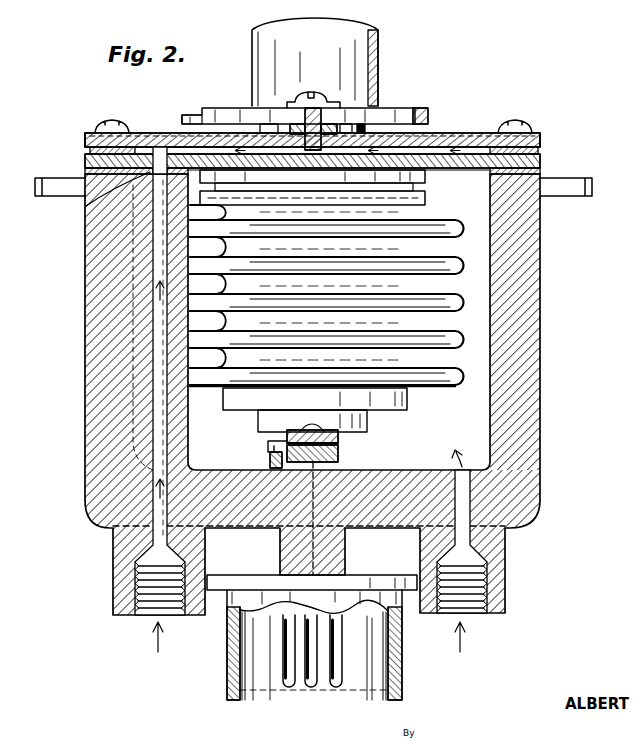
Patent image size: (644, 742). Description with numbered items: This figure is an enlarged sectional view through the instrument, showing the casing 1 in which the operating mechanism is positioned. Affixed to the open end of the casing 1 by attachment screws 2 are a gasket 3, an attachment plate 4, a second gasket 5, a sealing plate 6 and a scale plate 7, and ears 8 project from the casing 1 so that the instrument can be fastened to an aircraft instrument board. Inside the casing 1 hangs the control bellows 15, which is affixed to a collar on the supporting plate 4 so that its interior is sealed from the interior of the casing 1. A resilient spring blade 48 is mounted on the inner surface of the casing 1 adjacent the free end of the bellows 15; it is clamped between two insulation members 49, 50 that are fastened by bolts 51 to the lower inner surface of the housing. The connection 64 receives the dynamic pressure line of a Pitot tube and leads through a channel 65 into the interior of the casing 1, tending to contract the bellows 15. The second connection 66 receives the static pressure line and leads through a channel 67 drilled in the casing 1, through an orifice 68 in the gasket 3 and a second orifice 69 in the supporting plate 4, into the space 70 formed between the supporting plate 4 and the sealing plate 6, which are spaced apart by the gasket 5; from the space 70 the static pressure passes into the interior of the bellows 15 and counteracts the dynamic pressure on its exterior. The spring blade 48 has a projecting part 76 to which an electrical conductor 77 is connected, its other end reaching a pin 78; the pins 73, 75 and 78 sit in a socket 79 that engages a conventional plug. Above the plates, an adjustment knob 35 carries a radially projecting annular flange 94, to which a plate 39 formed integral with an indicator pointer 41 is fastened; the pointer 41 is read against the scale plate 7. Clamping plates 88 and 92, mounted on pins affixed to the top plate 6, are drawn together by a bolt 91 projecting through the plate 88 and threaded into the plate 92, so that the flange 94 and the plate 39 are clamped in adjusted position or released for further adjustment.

The casing 1 is at (520, 386).
The attachment screws 2 is at (104, 121).
The gasket 3 is at (86, 170).
The attachment plate 4 is at (85, 160).
The second gasket 5 is at (88, 150).
The sealing plate 6 is at (86, 138).
The scale plate 7 is at (433, 135).
The ears 8 is at (42, 186).
The control bellows 15 is at (463, 304).
The adjustment knob 35 is at (372, 46).
The plate 39 is at (422, 110).
The indicator pointer 41 is at (190, 115).
The resilient spring blade 48 is at (340, 443).
The insulation member 49 is at (340, 455).
The insulation member 50 is at (345, 436).
The bolts 51 is at (310, 424).
The connection 64 is at (505, 569).
The channel 65 is at (468, 500).
The second connection 66 is at (130, 584).
The channel 67 is at (160, 408).
The orifice 68 is at (135, 197).
The second orifice 69 is at (160, 150).
The space 70 is at (455, 150).
The pin 73 is at (311, 688).
The pin 75 is at (345, 688).
The projecting part 76 is at (268, 444).
The electrical conductor 77 is at (268, 462).
The pin 78 is at (289, 688).
The socket 79 is at (258, 630).
The clamping plate 88 is at (305, 98).
The bolt 91 is at (318, 92).
The clamping plate 92 is at (332, 128).
The annular flange 94 is at (222, 110).